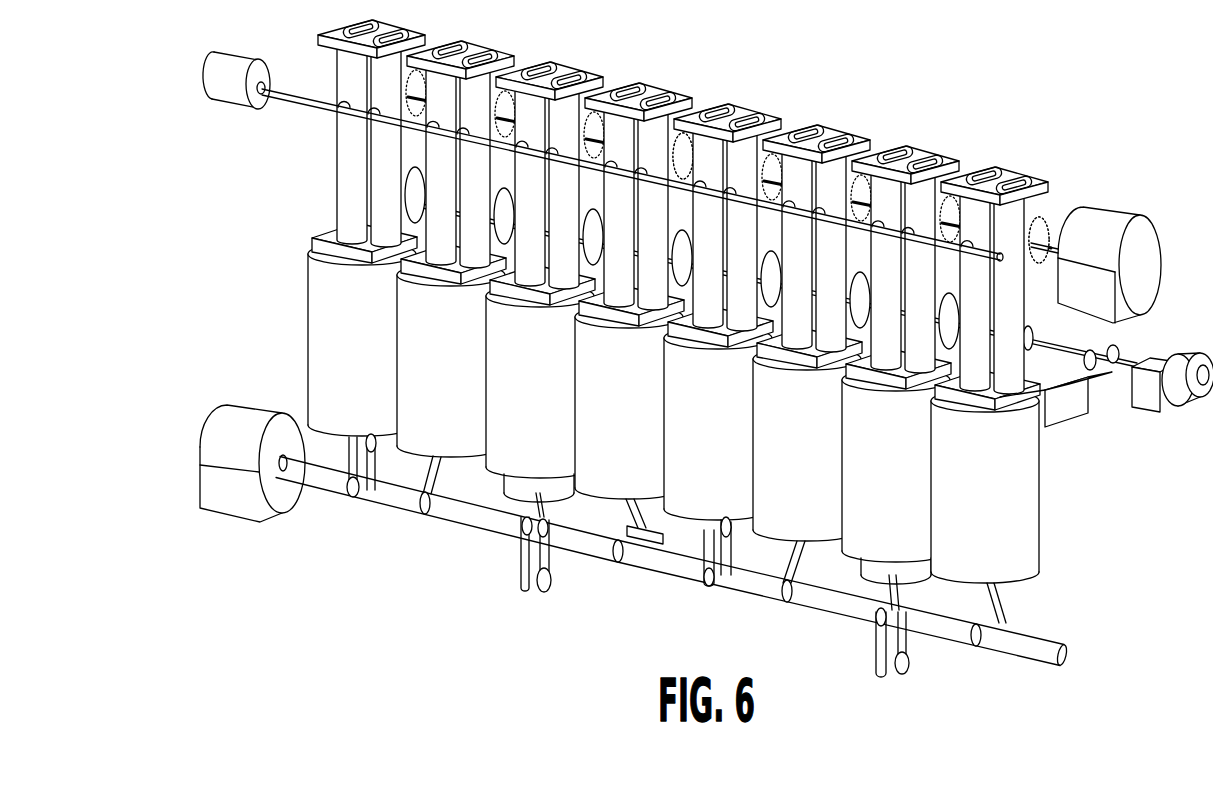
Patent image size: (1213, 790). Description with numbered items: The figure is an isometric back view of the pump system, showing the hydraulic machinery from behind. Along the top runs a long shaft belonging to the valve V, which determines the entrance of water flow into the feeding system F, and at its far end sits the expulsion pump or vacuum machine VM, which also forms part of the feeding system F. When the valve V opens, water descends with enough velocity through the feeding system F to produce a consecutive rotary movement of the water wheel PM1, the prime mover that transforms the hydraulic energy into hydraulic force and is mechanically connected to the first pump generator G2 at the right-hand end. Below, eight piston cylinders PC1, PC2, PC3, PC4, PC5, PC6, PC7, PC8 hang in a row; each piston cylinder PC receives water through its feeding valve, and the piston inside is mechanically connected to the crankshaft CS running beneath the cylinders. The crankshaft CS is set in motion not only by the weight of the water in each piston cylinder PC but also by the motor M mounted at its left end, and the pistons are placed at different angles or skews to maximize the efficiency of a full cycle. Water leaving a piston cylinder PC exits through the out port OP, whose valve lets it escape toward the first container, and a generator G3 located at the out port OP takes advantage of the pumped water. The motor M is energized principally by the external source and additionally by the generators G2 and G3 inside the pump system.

The expulsion pump or vacuum machine VM is at (257, 126).
The valve V is at (640, 78).
The water wheel PM1 is at (696, 140).
The feeding system F is at (1026, 213).
The first pump generator G2 is at (1134, 211).
The generator G3 is at (1187, 343).
The out port OP is at (1086, 421).
The piston cylinder PC is at (1031, 486).
The motor M is at (193, 485).
The crankshaft CS is at (491, 547).
The piston cylinder PC1 is at (365, 352).
The piston cylinder PC2 is at (465, 378).
The piston cylinder PC3 is at (553, 403).
The piston cylinder PC4 is at (645, 418).
The piston cylinder PC5 is at (728, 445).
The piston cylinder PC6 is at (816, 468).
The piston cylinder PC7 is at (906, 492).
The piston cylinder PC8 is at (998, 502).